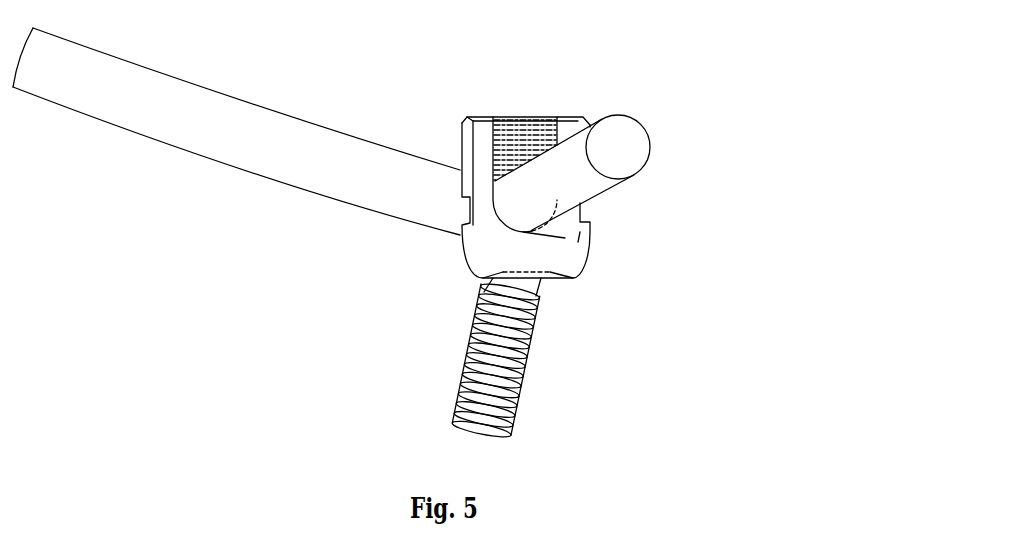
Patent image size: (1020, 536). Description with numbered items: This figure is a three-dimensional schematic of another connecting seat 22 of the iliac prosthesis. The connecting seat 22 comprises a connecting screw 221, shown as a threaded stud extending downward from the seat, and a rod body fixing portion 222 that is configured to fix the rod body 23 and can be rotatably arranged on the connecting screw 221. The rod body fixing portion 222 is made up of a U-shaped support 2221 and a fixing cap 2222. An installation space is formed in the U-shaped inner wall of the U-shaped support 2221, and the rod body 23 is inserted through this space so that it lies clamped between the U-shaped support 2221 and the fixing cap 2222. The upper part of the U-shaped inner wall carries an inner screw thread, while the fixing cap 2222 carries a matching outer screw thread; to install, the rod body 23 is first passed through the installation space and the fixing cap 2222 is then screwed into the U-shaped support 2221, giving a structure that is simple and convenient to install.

The connecting seat 22 is at (667, 228).
The rod body 23 is at (338, 172).
The connecting screw 221 is at (624, 364).
The rod body fixing portion 222 is at (637, 153).
The U-shaped support 2221 is at (530, 252).
The fixing cap 2222 is at (605, 95).